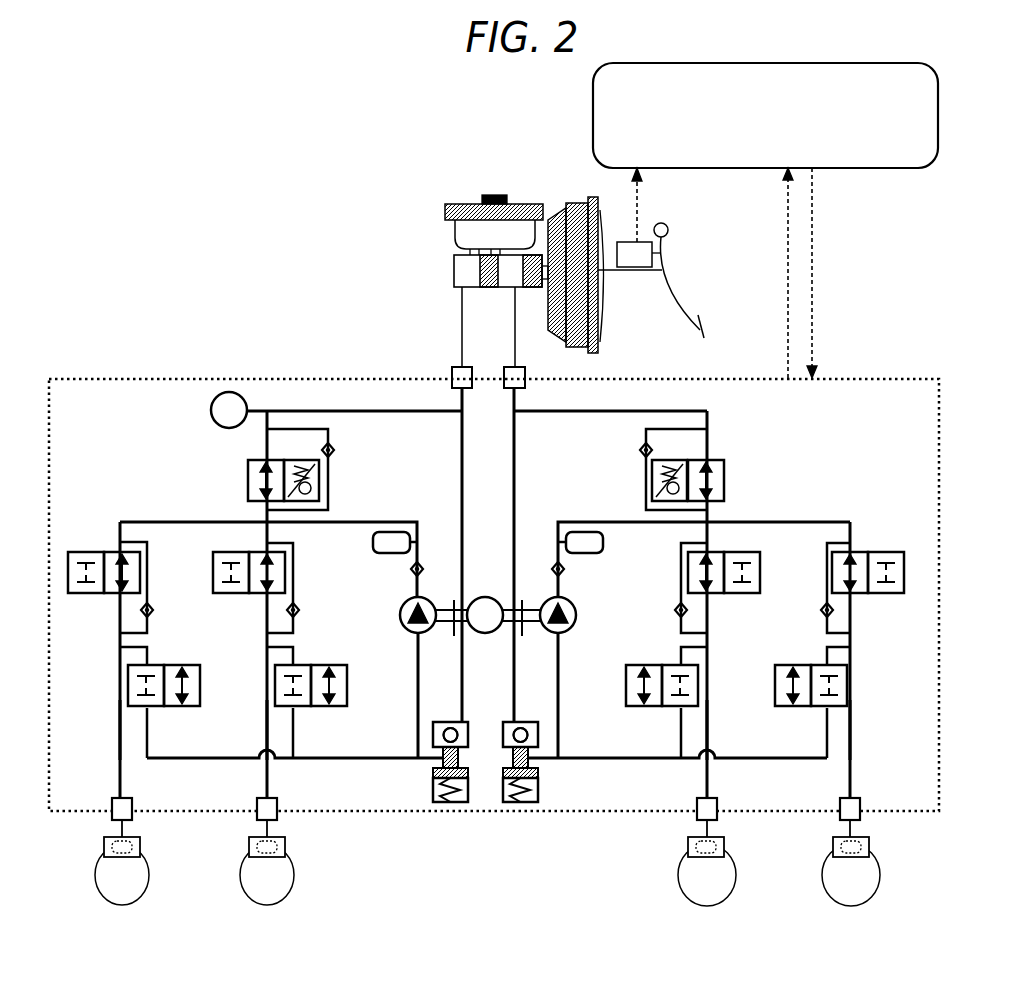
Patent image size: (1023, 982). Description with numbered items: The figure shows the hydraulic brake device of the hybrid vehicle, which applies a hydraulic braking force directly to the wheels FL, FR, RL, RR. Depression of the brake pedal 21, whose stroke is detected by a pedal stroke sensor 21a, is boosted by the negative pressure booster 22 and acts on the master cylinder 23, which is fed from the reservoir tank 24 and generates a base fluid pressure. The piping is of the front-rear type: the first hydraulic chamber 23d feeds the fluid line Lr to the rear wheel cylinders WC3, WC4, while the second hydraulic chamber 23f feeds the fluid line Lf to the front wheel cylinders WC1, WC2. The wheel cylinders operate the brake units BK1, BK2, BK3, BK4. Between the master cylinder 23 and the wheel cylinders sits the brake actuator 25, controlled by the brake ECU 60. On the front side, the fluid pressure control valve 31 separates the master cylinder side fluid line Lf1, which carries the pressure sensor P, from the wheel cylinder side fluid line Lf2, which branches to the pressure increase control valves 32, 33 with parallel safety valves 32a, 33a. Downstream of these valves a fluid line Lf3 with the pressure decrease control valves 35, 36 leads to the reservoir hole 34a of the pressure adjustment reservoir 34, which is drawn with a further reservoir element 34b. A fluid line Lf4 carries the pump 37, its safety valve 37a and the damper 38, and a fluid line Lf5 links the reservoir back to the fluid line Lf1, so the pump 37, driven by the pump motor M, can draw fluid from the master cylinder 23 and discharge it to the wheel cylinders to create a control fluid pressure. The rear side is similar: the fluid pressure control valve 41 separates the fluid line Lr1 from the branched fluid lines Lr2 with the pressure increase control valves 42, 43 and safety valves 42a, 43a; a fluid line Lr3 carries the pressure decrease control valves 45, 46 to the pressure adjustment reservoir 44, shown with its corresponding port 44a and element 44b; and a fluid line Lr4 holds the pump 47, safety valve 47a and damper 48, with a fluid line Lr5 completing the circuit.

The brake ECU 60 is at (942, 114).
The brake actuator 25 is at (873, 378).
The reservoir tank 24 is at (494, 195).
The master cylinder 23 is at (455, 264).
The second hydraulic chamber 23f is at (462, 276).
The first hydraulic chamber 23d is at (509, 288).
The negative pressure booster 22 is at (578, 201).
The brake pedal 21 is at (668, 291).
The pedal stroke sensor 21a is at (640, 245).
The fluid pressure control valve 31 is at (246, 482).
The fluid pressure control valve 41 is at (725, 486).
The pressure increase control valve 32 is at (103, 552).
The pressure increase control valve 33 is at (213, 575).
The pressure increase control valve 42 is at (762, 575).
The pressure increase control valve 43 is at (870, 552).
The safety valve 32a is at (150, 606).
The safety valve 33a is at (298, 606).
The safety valve 42a is at (676, 607).
The safety valve 43a is at (822, 607).
The pressure decrease control valve 35 is at (170, 664).
The pressure decrease control valve 36 is at (318, 664).
The pressure decrease control valve 45 is at (661, 664).
The pressure decrease control valve 46 is at (806, 664).
The pump 37 is at (403, 627).
The pump 47 is at (578, 614).
The safety valve 37a is at (410, 570).
The safety valve 47a is at (565, 570).
The damper 38 is at (373, 545).
The damper 48 is at (603, 545).
The pressure adjustment reservoir 34 is at (455, 805).
The pressure adjustment reservoir 44 is at (516, 805).
The reservoir hole 34a is at (432, 760).
The reservoir piston 44a is at (539, 760).
The reservoir check valve 34b is at (450, 722).
The reservoir check valve 44b is at (522, 722).
The pump motor M is at (485, 615).
The pressure sensor P is at (229, 410).
The fluid line Lf is at (306, 403).
The fluid line Lf1 is at (345, 411).
The fluid line Lf2 is at (118, 618).
The fluid line Lf3 is at (305, 760).
The fluid line Lf4 is at (348, 520).
The fluid line Lf5 is at (460, 468).
The fluid line Lr is at (712, 421).
The fluid line Lr1 is at (590, 411).
The fluid line Lr2 is at (710, 625).
The fluid line Lr3 is at (665, 762).
The fluid line Lr4 is at (612, 520).
The fluid line Lr5 is at (517, 468).
The wheel cylinder WC1 is at (104, 845).
The wheel cylinder WC2 is at (249, 843).
The wheel cylinder WC3 is at (688, 845).
The wheel cylinder WC4 is at (833, 845).
The brake unit BK1 is at (141, 848).
The brake unit BK2 is at (286, 848).
The brake unit BK3 is at (726, 848).
The brake unit BK4 is at (871, 845).
The left front wheel FL is at (150, 872).
The right front wheel FR is at (296, 872).
The left rear wheel RL is at (738, 872).
The right rear wheel RR is at (881, 872).